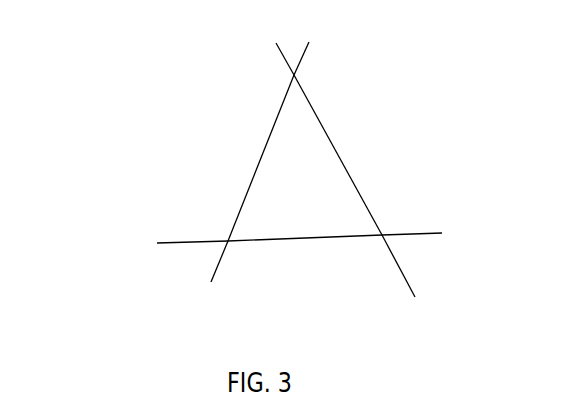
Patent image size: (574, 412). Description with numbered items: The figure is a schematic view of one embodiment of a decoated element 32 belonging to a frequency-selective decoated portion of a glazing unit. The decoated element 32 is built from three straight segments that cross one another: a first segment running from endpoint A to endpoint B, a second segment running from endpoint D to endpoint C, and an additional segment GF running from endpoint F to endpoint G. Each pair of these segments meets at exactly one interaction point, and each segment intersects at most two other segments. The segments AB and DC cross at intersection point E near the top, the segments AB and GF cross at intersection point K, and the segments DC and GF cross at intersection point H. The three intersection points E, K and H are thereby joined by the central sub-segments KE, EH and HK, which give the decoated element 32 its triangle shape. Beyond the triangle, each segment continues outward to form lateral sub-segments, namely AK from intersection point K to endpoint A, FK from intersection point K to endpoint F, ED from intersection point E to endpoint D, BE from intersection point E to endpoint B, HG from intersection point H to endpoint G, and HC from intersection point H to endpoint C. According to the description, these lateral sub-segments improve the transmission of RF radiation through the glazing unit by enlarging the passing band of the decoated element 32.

The decoated element 32 is at (129, 54).
The segment endpoint A is at (212, 277).
The segment endpoint B is at (313, 49).
The segment endpoint C is at (410, 286).
The segment endpoint D is at (274, 47).
The intersection point E is at (337, 155).
The segment endpoint F is at (180, 256).
The segment endpoint G is at (430, 243).
The intersection point H is at (312, 225).
The intersection point K is at (261, 158).